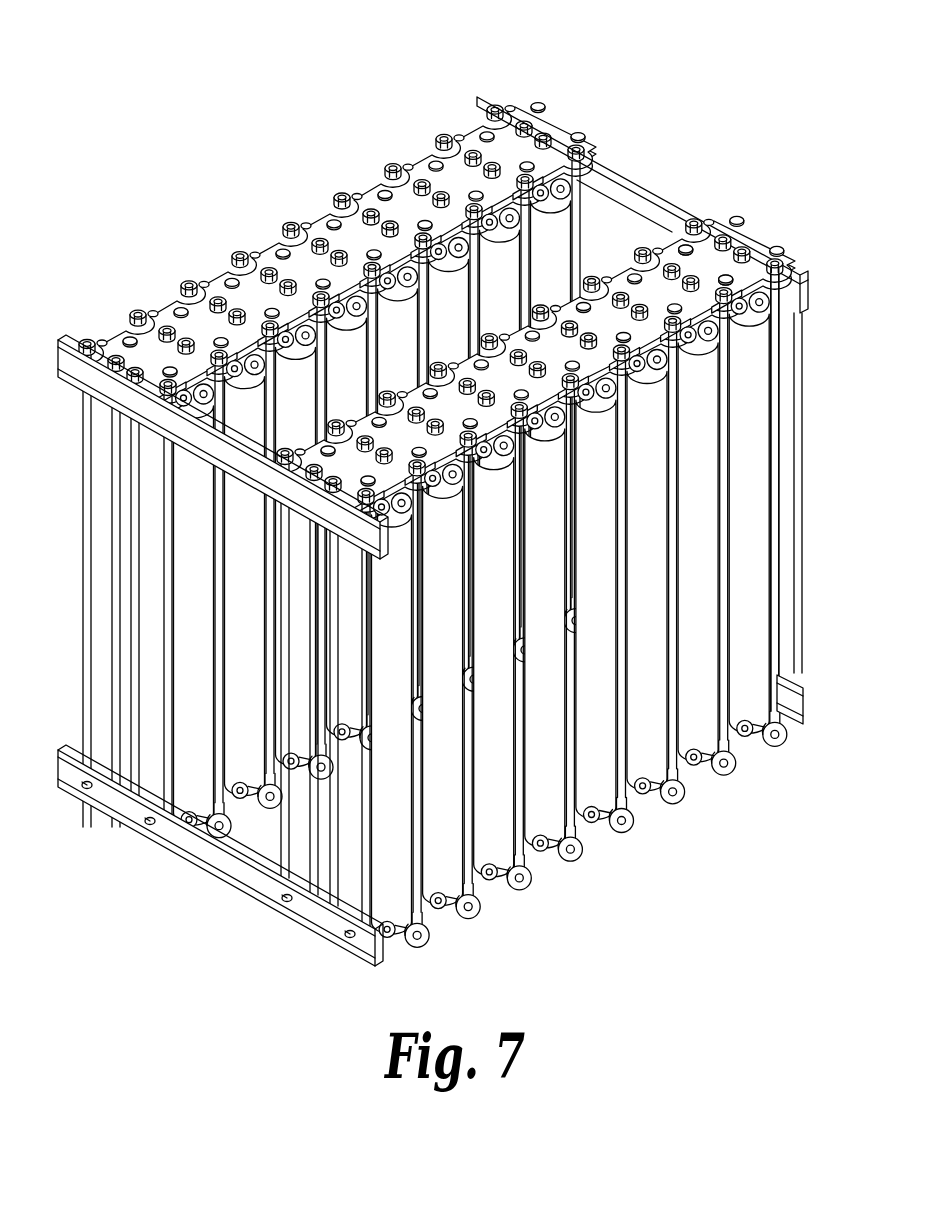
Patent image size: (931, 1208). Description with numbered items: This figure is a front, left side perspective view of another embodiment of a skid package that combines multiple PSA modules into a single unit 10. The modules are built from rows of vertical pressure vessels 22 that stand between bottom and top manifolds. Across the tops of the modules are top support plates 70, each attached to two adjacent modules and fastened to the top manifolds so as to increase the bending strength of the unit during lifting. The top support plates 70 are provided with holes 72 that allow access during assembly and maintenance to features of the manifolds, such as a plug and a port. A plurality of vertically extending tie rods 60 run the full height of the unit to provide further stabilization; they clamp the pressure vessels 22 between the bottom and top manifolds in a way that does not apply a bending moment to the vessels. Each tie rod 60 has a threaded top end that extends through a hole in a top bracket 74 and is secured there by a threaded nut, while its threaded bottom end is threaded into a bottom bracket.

The single unit 10 is at (464, 511).
The pressure vessels 22 is at (762, 451).
The tie rods 60 is at (778, 568).
The top support plates 70 is at (511, 124).
The holes 72 is at (727, 274).
The top bracket 74 is at (803, 292).